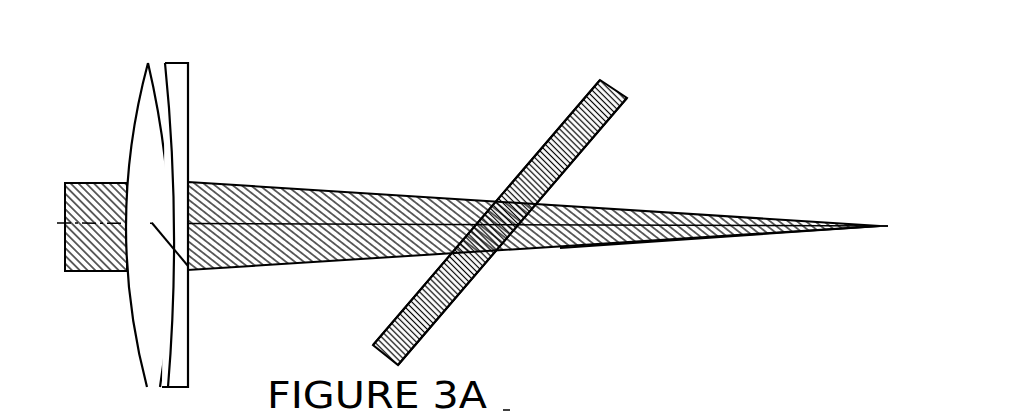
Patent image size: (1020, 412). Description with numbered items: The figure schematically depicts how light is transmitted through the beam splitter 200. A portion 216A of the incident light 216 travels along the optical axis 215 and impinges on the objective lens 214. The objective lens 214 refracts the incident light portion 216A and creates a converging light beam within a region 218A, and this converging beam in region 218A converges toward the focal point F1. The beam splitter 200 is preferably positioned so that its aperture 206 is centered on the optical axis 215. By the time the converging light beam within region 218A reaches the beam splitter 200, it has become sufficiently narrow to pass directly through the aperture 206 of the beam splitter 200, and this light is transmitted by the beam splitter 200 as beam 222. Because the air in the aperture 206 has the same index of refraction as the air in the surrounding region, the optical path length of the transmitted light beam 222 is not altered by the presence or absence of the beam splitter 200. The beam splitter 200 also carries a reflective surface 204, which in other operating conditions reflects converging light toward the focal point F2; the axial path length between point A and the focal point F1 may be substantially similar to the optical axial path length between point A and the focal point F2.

The beam splitter 200 is at (627, 97).
The reflective surface 204 is at (545, 143).
The aperture 206 is at (493, 252).
The objective lens 214 is at (185, 96).
The optical axis 215 is at (95, 224).
The incident light 216 is at (106, 245).
The portion of incident light 216A is at (84, 190).
The region of converging light beam 218A is at (342, 198).
The transmitted light beam 222 is at (690, 237).
The point A is at (190, 271).
The focal point F1 is at (880, 226).
The focal point F2 is at (505, 410).